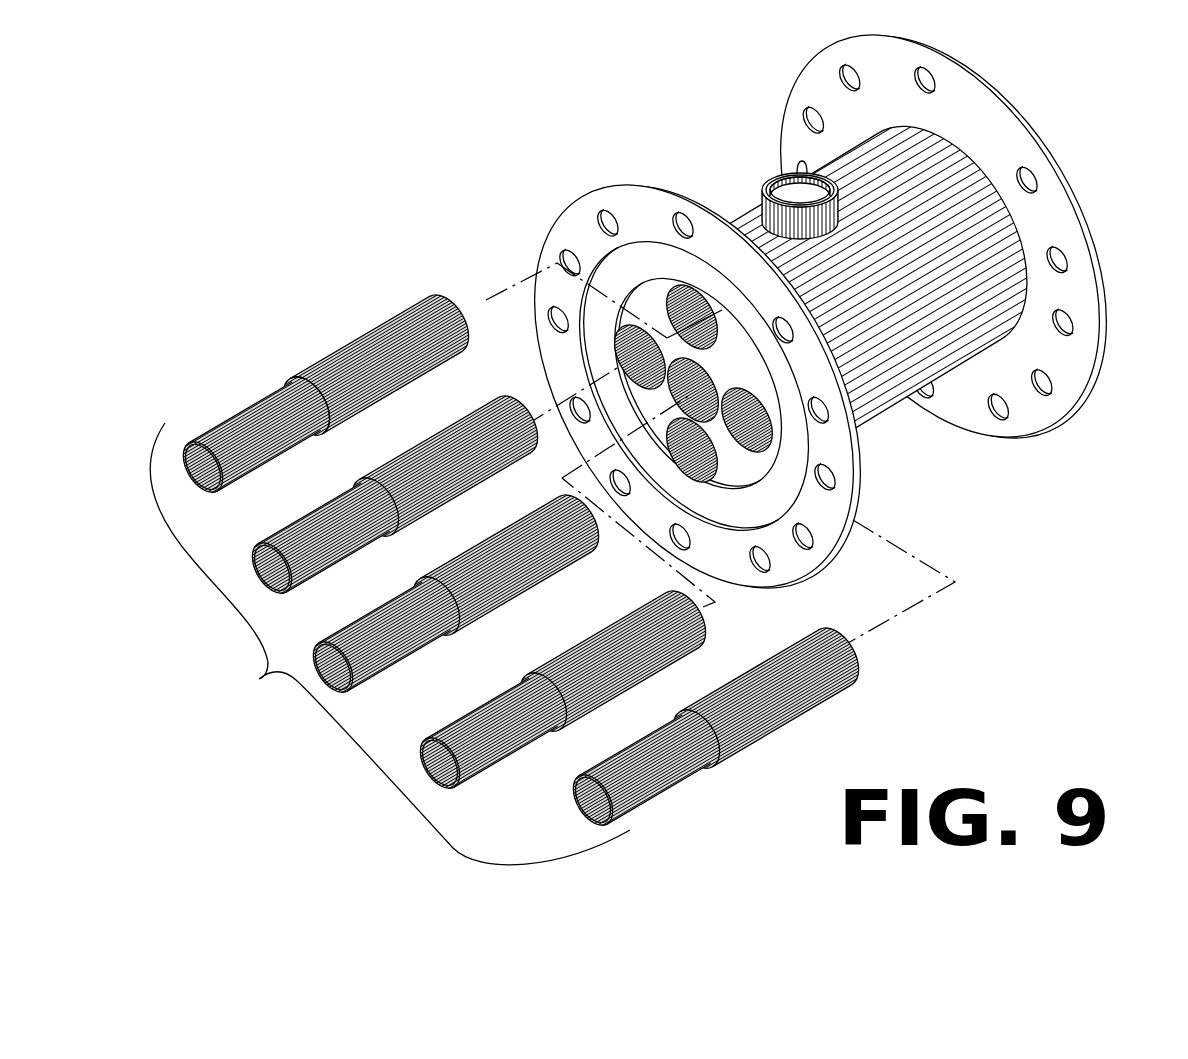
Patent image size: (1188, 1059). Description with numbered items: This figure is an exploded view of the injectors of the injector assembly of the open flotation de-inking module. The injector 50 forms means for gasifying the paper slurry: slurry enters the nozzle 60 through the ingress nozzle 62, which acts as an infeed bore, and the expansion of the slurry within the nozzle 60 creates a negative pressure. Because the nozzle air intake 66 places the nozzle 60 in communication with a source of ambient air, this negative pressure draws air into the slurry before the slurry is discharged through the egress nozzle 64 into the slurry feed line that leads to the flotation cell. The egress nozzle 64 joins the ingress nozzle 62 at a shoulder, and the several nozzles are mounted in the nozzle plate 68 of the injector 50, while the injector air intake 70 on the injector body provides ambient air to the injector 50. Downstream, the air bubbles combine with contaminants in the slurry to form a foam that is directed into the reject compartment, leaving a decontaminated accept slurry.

The injector 50 is at (732, 322).
The nozzle 60 is at (504, 569).
The ingress nozzle 62 is at (218, 424).
The egress nozzle 64 is at (417, 314).
The nozzle air intake 66 is at (298, 384).
The nozzle plate 68 is at (655, 300).
The injector air intake 70 is at (782, 184).